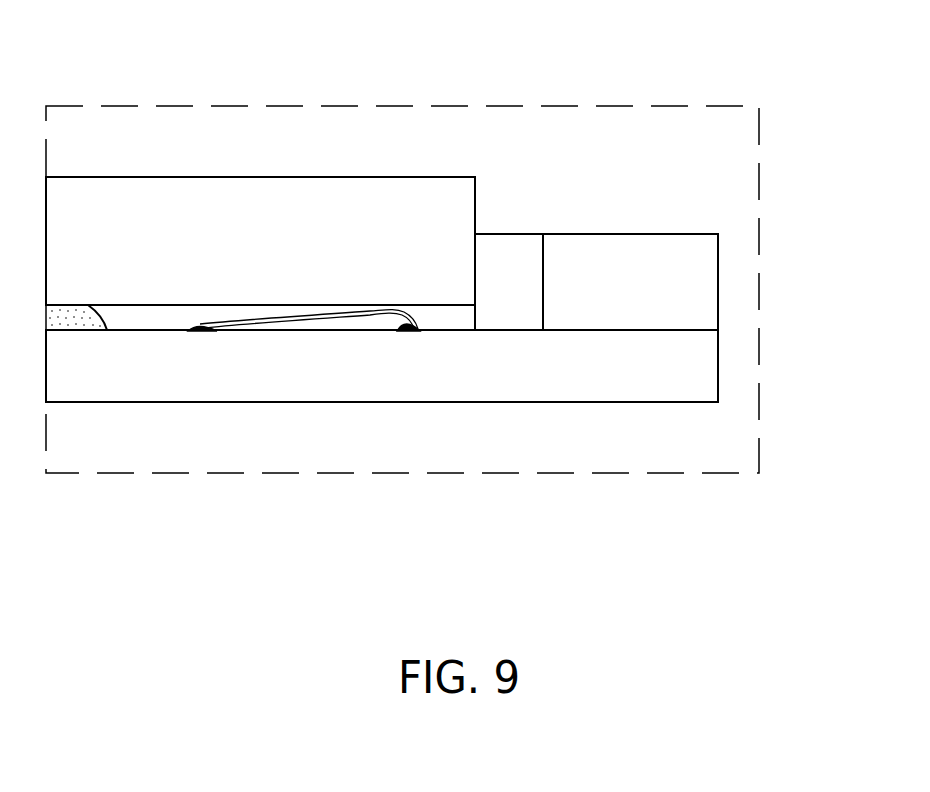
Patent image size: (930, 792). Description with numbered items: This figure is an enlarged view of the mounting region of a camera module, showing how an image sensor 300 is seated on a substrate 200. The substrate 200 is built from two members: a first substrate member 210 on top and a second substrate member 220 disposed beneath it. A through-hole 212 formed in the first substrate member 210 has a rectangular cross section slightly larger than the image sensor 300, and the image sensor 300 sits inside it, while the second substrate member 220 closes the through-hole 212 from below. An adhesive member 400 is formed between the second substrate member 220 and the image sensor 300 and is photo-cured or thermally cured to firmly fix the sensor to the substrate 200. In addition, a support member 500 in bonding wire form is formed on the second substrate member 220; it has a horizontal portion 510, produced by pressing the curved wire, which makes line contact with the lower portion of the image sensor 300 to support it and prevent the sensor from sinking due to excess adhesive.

The substrate 200 is at (474, 318).
The first substrate member 210 is at (707, 271).
The through-hole 212 is at (497, 292).
The second substrate member 220 is at (439, 366).
The image sensor 300 is at (316, 197).
The adhesive member 400 is at (75, 320).
The support member 500 is at (268, 320).
The horizontal portion 510 is at (393, 312).